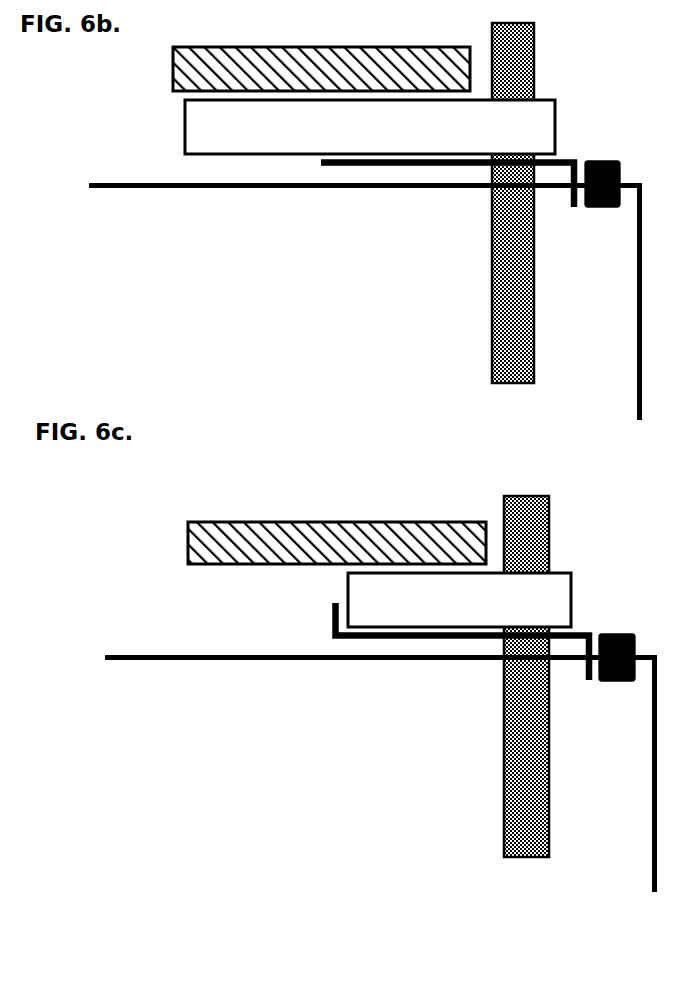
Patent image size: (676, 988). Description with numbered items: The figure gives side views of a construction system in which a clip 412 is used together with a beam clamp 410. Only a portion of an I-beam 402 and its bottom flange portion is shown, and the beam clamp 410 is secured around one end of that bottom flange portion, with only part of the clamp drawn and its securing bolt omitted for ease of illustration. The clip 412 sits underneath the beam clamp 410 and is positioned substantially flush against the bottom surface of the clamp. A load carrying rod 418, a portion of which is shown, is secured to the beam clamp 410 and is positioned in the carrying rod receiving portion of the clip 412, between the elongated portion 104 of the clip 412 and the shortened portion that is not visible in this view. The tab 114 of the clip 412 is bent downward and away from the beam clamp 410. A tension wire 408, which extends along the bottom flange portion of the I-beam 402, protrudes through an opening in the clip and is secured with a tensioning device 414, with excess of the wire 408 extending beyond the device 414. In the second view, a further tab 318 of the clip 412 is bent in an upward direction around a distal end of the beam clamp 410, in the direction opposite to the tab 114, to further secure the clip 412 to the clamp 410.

In FIG. 6B, the elongated portion 104 is at (408, 165).
In FIG. 6C, the elongated portion 104 is at (420, 639).
In FIG. 6B, the tab 114 is at (573, 207).
In FIG. 6C, the tab 114 is at (587, 680).
In FIG. 6C, the tab 318 is at (333, 607).
In FIG. 6B, the I-beam 402 is at (173, 72).
In FIG. 6C, the I-beam 402 is at (188, 542).
In FIG. 6B, the tension wire 408 is at (142, 188).
In FIG. 6C, the tension wire 408 is at (157, 662).
In FIG. 6B, the beam clamp 410 is at (278, 155).
In FIG. 6C, the beam clamp 410 is at (388, 615).
In FIG. 6B, the clip 412 is at (567, 157).
In FIG. 6C, the clip 412 is at (578, 627).
In FIG. 6B, the tensioning device 414 is at (603, 207).
In FIG. 6C, the tensioning device 414 is at (617, 680).
In FIG. 6B, the carrying rod 418 is at (512, 383).
In FIG. 6C, the carrying rod 418 is at (528, 857).